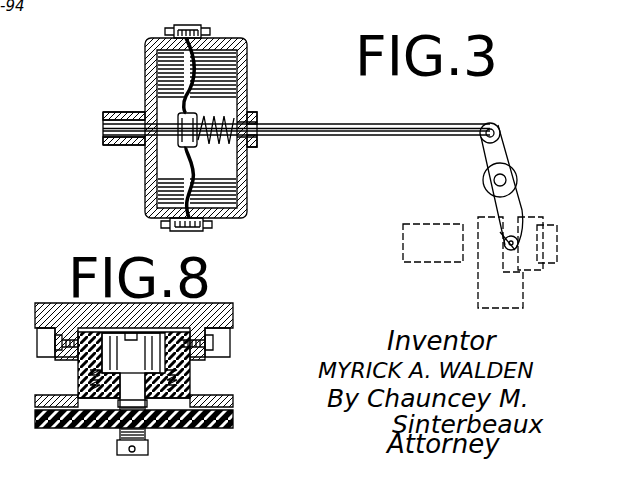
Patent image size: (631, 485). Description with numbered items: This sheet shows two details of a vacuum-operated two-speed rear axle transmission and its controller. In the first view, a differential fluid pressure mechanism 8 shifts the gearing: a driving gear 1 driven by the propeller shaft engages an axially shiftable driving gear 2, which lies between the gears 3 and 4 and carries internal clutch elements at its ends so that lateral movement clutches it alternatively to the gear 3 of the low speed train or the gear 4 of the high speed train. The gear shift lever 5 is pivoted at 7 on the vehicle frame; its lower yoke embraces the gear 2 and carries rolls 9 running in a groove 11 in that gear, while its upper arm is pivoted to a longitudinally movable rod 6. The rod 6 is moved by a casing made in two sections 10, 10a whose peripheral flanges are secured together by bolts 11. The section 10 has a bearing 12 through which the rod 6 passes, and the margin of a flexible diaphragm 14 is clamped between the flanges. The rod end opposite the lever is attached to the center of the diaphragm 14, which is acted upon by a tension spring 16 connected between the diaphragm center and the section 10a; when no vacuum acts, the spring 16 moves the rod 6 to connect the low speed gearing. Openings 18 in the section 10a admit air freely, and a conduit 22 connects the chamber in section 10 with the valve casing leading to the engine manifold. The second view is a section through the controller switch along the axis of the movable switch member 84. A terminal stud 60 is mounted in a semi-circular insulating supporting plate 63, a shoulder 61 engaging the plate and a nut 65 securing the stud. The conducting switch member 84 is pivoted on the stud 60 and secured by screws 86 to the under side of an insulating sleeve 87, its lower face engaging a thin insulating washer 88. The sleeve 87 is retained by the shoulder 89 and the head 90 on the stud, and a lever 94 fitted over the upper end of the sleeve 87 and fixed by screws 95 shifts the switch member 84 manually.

In FIG. 3, the driving gear 1 is at (518, 300).
In FIG. 3, the shiftable driving gear 2 is at (488, 253).
In FIG. 3, the low speed gear 3 is at (435, 225).
In FIG. 3, the high speed gear 4 is at (552, 225).
In FIG. 3, the gear shift lever 5 is at (483, 152).
In FIG. 3, the rod 6 is at (340, 125).
In FIG. 3, the pivot 7 is at (503, 179).
In FIG. 3, the pressure responsive device 8 is at (252, 10).
In FIG. 3, the rolls 9 is at (505, 240).
In FIG. 3, the casing section 10 is at (147, 172).
In FIG. 3, the casing section 10a is at (243, 180).
In FIG. 3, the bolts 11 is at (206, 17).
In FIG. 3, the bearing 12 is at (256, 122).
In FIG. 3, the flexible diaphragm 14 is at (200, 165).
In FIG. 3, the tension spring 16 is at (222, 112).
In FIG. 3, the openings 18 is at (238, 72).
In FIG. 3, the conduit 22 is at (118, 112).
In FIG. 8, the terminal stud 60 is at (163, 338).
In FIG. 8, the shoulder 61 is at (153, 424).
In FIG. 8, the supporting plate 63 is at (43, 428).
In FIG. 8, the nut 65 is at (117, 434).
In FIG. 8, the movable switch member 84 is at (45, 404).
In FIG. 8, the screws 86 is at (185, 382).
In FIG. 8, the sleeve 87 is at (193, 360).
In FIG. 8, the washer 88 is at (176, 421).
In FIG. 8, the shoulder 89 is at (88, 382).
In FIG. 8, the head 90 is at (78, 361).
In FIG. 8, the lever 94 is at (235, 315).
In FIG. 8, the screws 95 is at (213, 342).